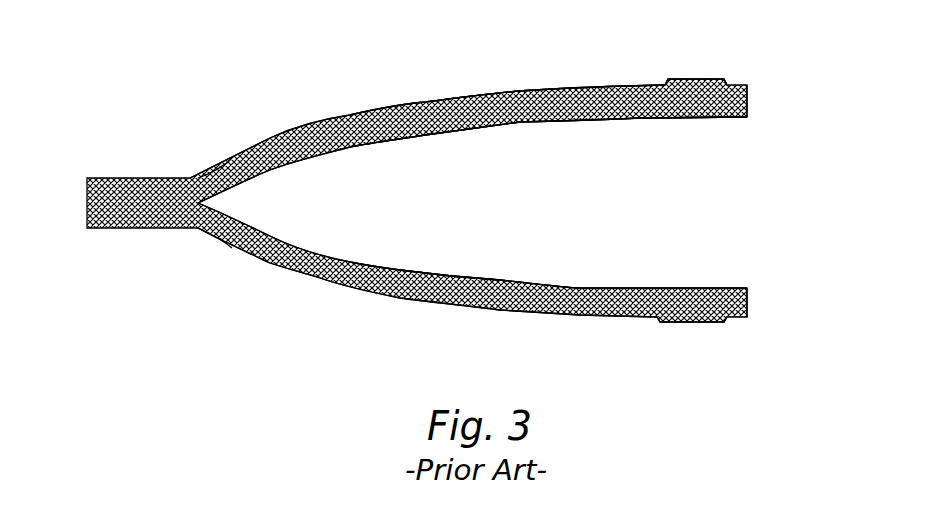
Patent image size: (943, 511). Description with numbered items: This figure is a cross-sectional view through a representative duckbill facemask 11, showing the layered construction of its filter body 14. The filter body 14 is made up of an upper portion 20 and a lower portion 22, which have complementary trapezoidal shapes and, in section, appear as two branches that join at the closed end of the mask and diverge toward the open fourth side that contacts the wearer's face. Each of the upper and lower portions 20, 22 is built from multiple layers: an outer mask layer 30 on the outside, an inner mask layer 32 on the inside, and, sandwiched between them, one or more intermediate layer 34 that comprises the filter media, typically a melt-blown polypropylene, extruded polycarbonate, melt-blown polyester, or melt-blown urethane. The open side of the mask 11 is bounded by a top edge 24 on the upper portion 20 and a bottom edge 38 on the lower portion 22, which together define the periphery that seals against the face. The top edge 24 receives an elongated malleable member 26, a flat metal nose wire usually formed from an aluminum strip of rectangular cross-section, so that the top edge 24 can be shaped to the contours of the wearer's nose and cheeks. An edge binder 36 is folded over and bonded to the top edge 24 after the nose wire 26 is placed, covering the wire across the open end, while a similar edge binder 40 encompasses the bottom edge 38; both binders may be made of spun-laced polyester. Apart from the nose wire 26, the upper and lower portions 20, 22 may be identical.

The facemask 11 is at (334, 68).
The filter body 14 is at (535, 89).
The upper portion 20 is at (299, 112).
The lower portion 22 is at (371, 308).
The top edge 24 is at (756, 92).
The elongated malleable member 26 is at (706, 78).
The outer mask layer 30 is at (218, 168).
The inner mask layer 32 is at (416, 135).
The intermediate layer 34 is at (426, 101).
The edge binder 36 is at (706, 119).
The bottom edge 38 is at (716, 328).
The edge binder 40 is at (692, 323).